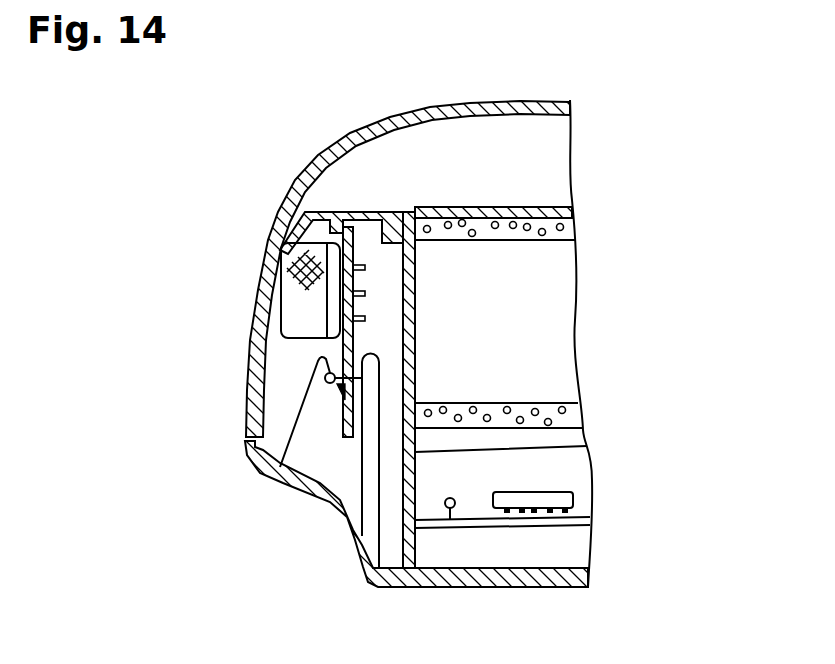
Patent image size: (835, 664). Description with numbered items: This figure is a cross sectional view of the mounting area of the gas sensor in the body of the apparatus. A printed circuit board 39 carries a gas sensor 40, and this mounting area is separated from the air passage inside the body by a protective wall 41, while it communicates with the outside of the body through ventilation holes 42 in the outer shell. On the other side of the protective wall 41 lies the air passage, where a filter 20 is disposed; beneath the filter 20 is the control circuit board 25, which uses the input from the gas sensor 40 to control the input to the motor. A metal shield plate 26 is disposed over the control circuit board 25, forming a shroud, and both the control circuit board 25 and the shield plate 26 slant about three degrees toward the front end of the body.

The filter 20 is at (497, 207).
The control circuit board 25 is at (560, 523).
The shield plate 26 is at (537, 447).
The printed circuit board 39 is at (343, 353).
The gas sensor 40 is at (265, 248).
The protective wall 41 is at (415, 310).
The ventilation holes 42 is at (250, 305).